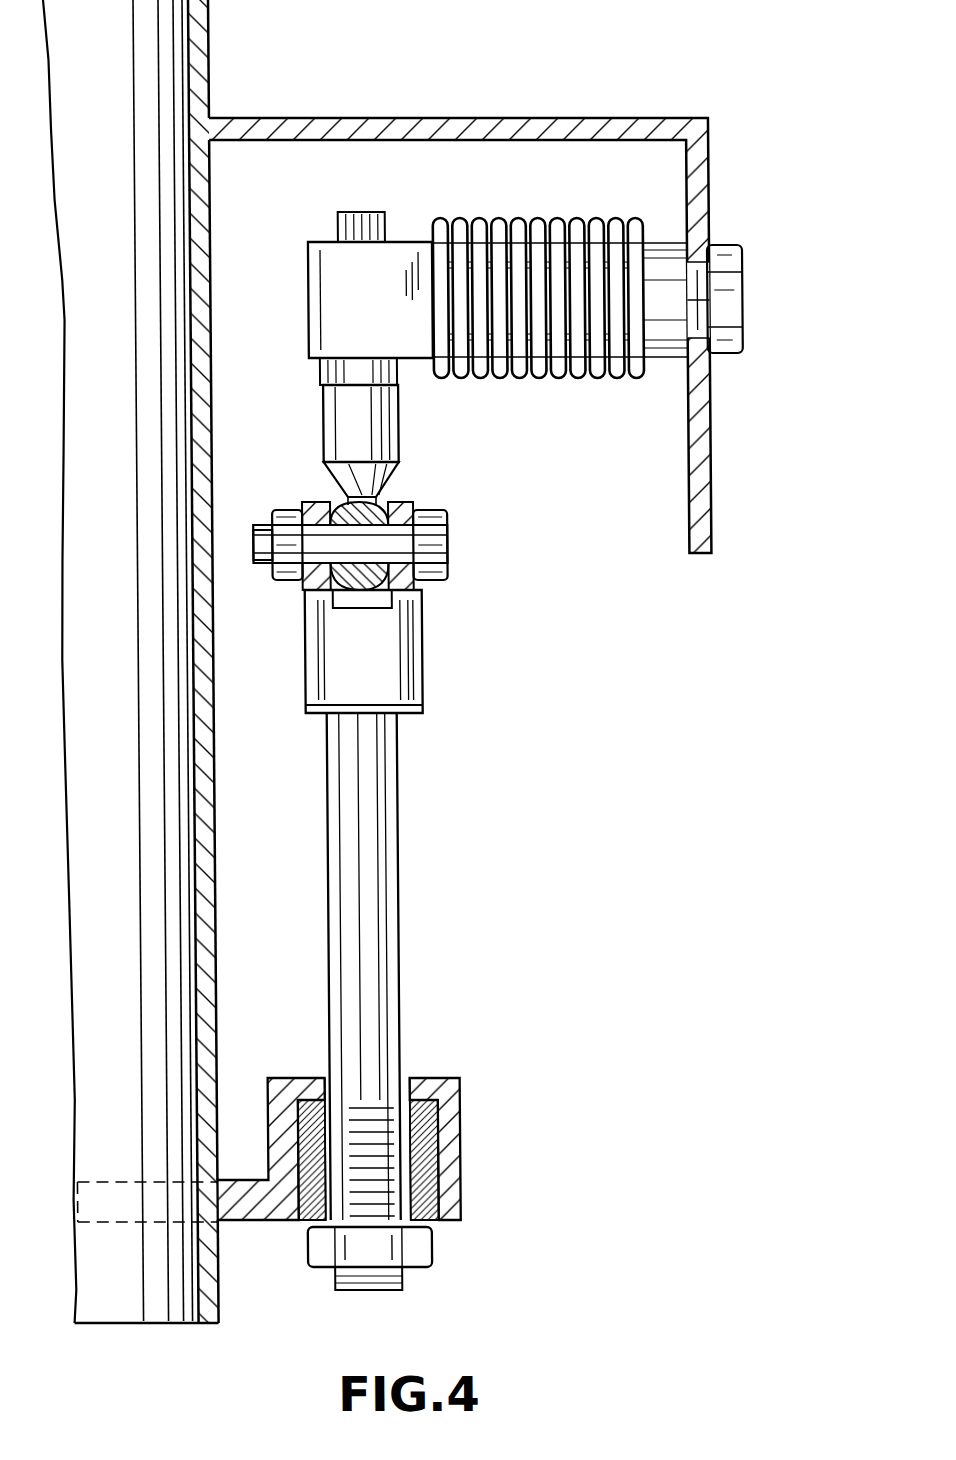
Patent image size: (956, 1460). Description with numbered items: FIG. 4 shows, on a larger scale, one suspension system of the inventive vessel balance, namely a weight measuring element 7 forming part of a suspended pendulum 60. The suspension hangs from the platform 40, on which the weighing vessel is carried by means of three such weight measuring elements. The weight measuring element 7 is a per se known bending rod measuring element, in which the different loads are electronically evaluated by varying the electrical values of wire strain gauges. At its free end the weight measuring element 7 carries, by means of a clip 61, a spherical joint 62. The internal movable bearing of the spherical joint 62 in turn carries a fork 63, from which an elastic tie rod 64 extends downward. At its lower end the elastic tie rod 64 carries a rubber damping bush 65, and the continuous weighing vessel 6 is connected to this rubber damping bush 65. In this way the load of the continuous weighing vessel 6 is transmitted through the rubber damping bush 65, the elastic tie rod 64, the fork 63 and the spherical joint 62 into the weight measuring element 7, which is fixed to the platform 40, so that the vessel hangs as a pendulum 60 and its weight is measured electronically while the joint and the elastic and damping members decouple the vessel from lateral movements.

The continuous weighing vessel 6 is at (197, 667).
The platform 40 is at (539, 122).
The suspended pendulum 60 is at (507, 478).
The weight measuring element 7 is at (492, 226).
The clip 61 is at (380, 436).
The spherical joint 62 is at (380, 538).
The fork 63 is at (367, 650).
The elastic tie rod 64 is at (366, 820).
The rubber damping bush 65 is at (434, 1140).